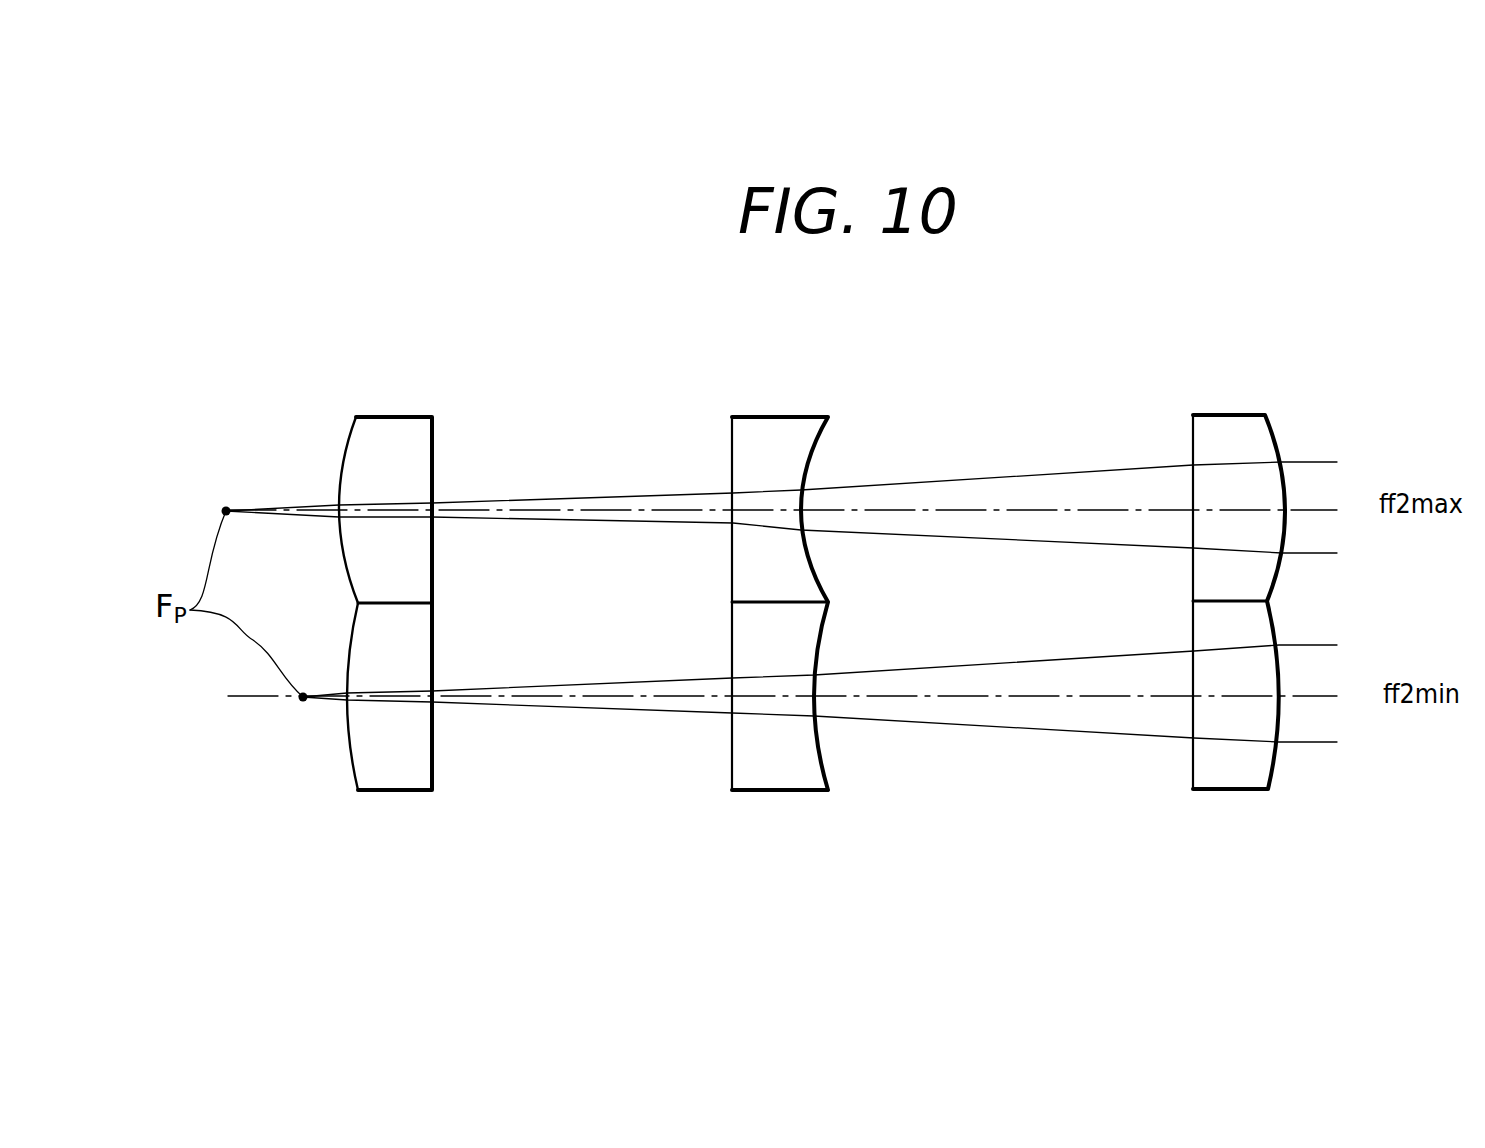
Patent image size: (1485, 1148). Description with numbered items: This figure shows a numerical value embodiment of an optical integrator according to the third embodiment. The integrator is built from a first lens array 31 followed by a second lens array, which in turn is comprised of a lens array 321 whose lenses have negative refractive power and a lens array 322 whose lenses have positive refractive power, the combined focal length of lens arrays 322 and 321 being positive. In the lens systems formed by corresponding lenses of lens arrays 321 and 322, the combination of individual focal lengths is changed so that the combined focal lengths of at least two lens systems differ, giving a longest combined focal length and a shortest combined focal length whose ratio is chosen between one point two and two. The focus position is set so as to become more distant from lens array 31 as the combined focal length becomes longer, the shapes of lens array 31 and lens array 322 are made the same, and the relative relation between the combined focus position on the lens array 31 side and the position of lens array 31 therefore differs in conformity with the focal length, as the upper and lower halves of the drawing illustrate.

The lens array 31 is at (392, 415).
The lens array 321 is at (777, 413).
The lens array 322 is at (1233, 413).